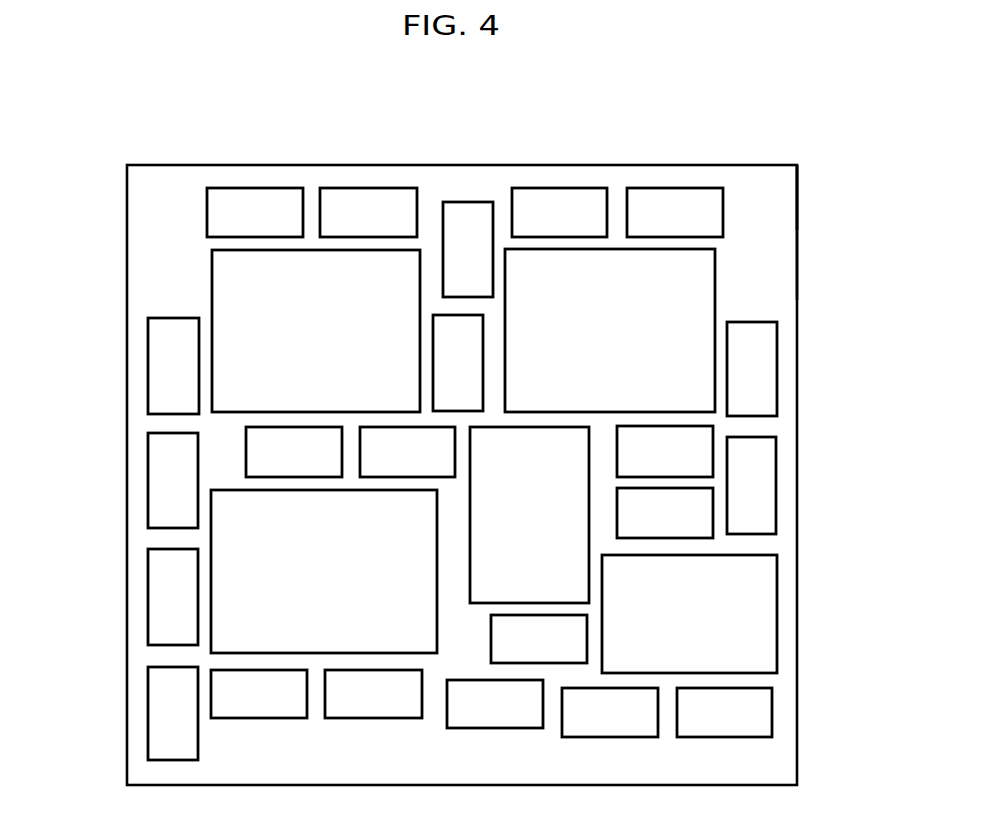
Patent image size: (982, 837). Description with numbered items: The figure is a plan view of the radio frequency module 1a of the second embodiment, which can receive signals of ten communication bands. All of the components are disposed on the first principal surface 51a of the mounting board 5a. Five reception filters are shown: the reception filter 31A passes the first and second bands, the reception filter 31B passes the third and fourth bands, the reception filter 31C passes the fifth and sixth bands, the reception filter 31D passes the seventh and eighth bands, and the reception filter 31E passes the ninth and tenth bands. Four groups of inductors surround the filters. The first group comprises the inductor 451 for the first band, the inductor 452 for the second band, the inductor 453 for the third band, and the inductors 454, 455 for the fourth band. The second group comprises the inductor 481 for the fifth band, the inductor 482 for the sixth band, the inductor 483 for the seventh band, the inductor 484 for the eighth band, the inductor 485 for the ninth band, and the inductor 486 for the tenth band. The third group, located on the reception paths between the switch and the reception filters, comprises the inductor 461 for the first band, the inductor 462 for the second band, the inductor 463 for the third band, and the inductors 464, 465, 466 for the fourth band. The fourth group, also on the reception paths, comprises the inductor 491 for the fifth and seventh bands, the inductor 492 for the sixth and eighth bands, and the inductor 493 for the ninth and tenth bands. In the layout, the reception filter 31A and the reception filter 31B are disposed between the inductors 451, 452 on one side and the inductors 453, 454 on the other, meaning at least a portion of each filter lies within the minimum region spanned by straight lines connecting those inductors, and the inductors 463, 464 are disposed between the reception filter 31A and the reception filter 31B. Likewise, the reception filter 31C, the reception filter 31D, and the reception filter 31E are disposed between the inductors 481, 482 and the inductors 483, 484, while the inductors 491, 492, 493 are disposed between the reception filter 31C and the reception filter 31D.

The radio frequency module 1a is at (815, 156).
The mounting board 5a is at (815, 188).
The first principal surface 51a is at (787, 212).
The reception filter 31A is at (222, 267).
The reception filter 31B is at (224, 530).
The reception filter 31C is at (703, 273).
The reception filter 31D is at (763, 580).
The reception filter 31E is at (558, 437).
The inductor 451 is at (229, 197).
The inductor 452 is at (347, 197).
The inductor 453 is at (355, 708).
The inductor 454 is at (238, 705).
The inductor 455 is at (152, 707).
The inductor 461 is at (158, 353).
The inductor 462 is at (445, 333).
The inductor 463 is at (387, 435).
The inductor 464 is at (274, 438).
The inductor 465 is at (162, 472).
The inductor 466 is at (158, 588).
The inductor 481 is at (707, 193).
The inductor 482 is at (580, 193).
The inductor 483 is at (713, 728).
The inductor 484 is at (588, 725).
The inductor 485 is at (518, 632).
The inductor 486 is at (463, 213).
The inductor 491 is at (768, 477).
The inductor 492 is at (693, 437).
The inductor 493 is at (705, 507).